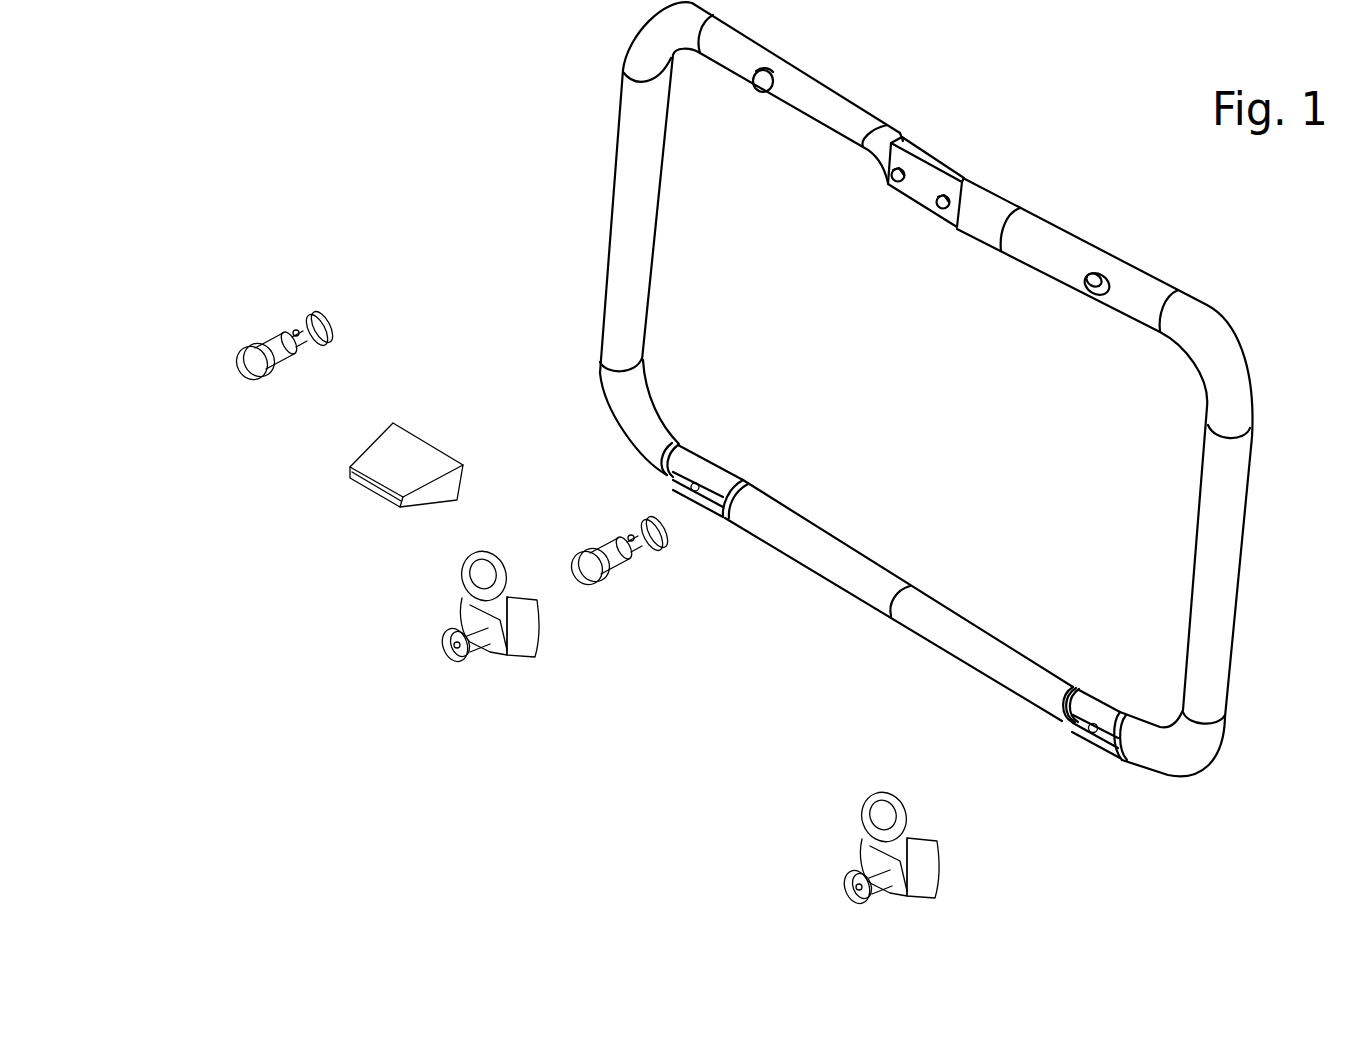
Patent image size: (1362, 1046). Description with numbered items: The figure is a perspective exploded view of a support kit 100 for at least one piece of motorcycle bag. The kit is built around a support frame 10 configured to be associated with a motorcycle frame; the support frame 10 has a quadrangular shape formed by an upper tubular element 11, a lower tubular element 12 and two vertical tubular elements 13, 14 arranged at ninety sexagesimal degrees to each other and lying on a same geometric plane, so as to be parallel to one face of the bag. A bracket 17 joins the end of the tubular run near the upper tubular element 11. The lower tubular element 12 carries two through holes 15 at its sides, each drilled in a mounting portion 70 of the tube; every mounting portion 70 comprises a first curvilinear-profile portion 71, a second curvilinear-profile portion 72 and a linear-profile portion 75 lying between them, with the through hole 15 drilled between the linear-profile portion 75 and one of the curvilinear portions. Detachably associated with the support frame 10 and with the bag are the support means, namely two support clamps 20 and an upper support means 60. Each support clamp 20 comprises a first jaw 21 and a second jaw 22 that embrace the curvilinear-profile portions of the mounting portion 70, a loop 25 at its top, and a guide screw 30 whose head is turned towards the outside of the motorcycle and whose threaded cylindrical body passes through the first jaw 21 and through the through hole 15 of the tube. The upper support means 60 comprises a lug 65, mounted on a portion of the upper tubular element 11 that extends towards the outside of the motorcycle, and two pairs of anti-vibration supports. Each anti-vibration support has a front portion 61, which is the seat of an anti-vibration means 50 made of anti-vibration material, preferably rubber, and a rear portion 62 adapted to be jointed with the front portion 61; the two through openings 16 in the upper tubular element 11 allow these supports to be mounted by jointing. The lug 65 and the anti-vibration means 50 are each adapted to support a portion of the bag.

The support kit 100 is at (355, 170).
The support frame 10 is at (1216, 307).
The upper tubular element 11 is at (1050, 237).
The lower tubular element 12 is at (852, 557).
The vertical tubular element 13 is at (627, 226).
The vertical tubular element 14 is at (1220, 567).
The through hole 15 is at (695, 495).
The through opening 16 is at (771, 73).
The bracket plate 17 is at (925, 182).
The support clamp 20 is at (531, 578).
The first jaw 21 is at (503, 660).
The second jaw 22 is at (520, 640).
The clamp loop 25 is at (505, 595).
The guide screw 30 is at (432, 654).
The anti-vibration means 50 is at (248, 365).
The upper support means 60 is at (269, 312).
The front portion 61 is at (272, 343).
The rear portion 62 is at (292, 332).
The lug 65 is at (388, 458).
The mounting portion 70 is at (714, 458).
The first curvilinear-profile portion 71 is at (1113, 717).
The second curvilinear-profile portion 72 is at (1110, 758).
The linear-profile portion 75 is at (1080, 722).